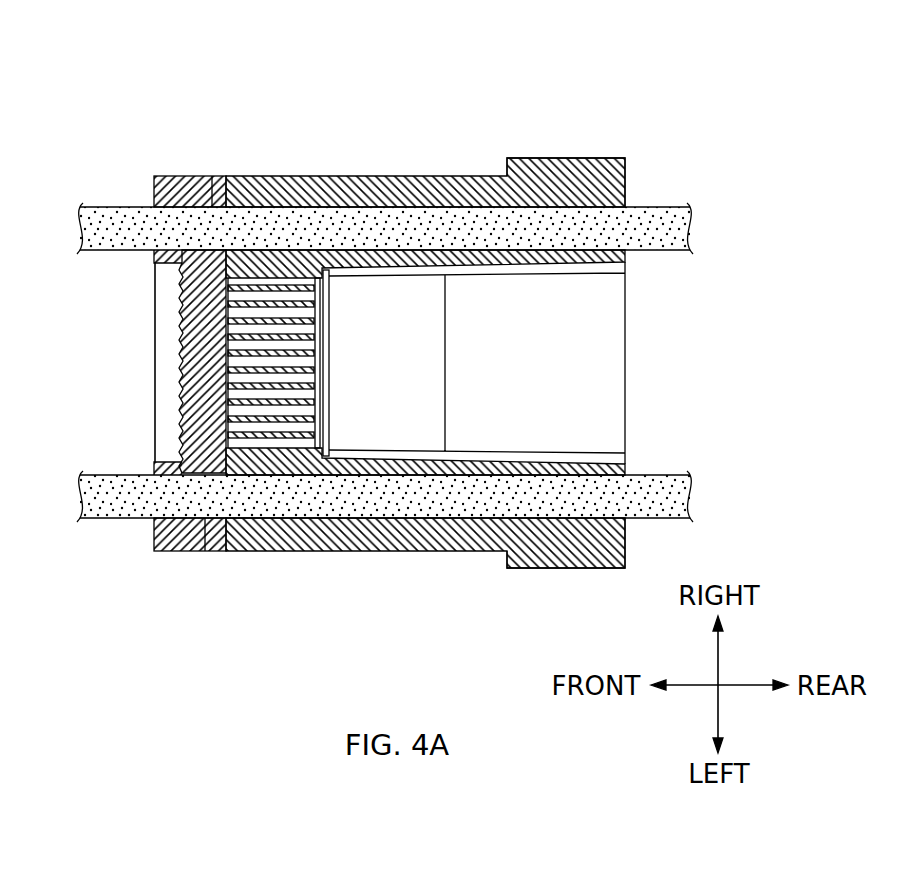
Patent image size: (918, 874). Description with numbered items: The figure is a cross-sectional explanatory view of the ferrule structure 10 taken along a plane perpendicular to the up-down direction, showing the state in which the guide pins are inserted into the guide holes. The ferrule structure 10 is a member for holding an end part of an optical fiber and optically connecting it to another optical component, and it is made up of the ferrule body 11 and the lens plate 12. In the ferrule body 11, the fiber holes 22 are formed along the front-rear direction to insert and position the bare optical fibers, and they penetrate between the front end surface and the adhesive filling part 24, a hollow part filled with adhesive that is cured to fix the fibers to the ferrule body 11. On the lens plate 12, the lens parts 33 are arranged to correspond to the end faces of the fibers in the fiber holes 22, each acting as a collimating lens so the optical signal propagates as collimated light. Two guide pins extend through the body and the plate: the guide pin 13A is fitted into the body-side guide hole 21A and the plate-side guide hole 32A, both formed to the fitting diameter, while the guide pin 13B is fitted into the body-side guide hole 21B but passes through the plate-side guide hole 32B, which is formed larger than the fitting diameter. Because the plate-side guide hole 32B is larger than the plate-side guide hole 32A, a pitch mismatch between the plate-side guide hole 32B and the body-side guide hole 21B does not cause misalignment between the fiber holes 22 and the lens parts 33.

The ferrule structure 10 is at (320, 104).
The ferrule body 11 is at (365, 176).
The lens plate 12 is at (178, 176).
The guide pin 13A is at (441, 223).
The guide pin 13B is at (441, 503).
The body-side guide hole 21A is at (560, 207).
The body-side guide hole 21B is at (557, 551).
The fiber hole 22 is at (265, 297).
The adhesive filling part 24 is at (368, 412).
The plate-side guide hole 32A is at (212, 176).
The plate-side guide hole 32B is at (205, 551).
The lens part 33 is at (178, 355).